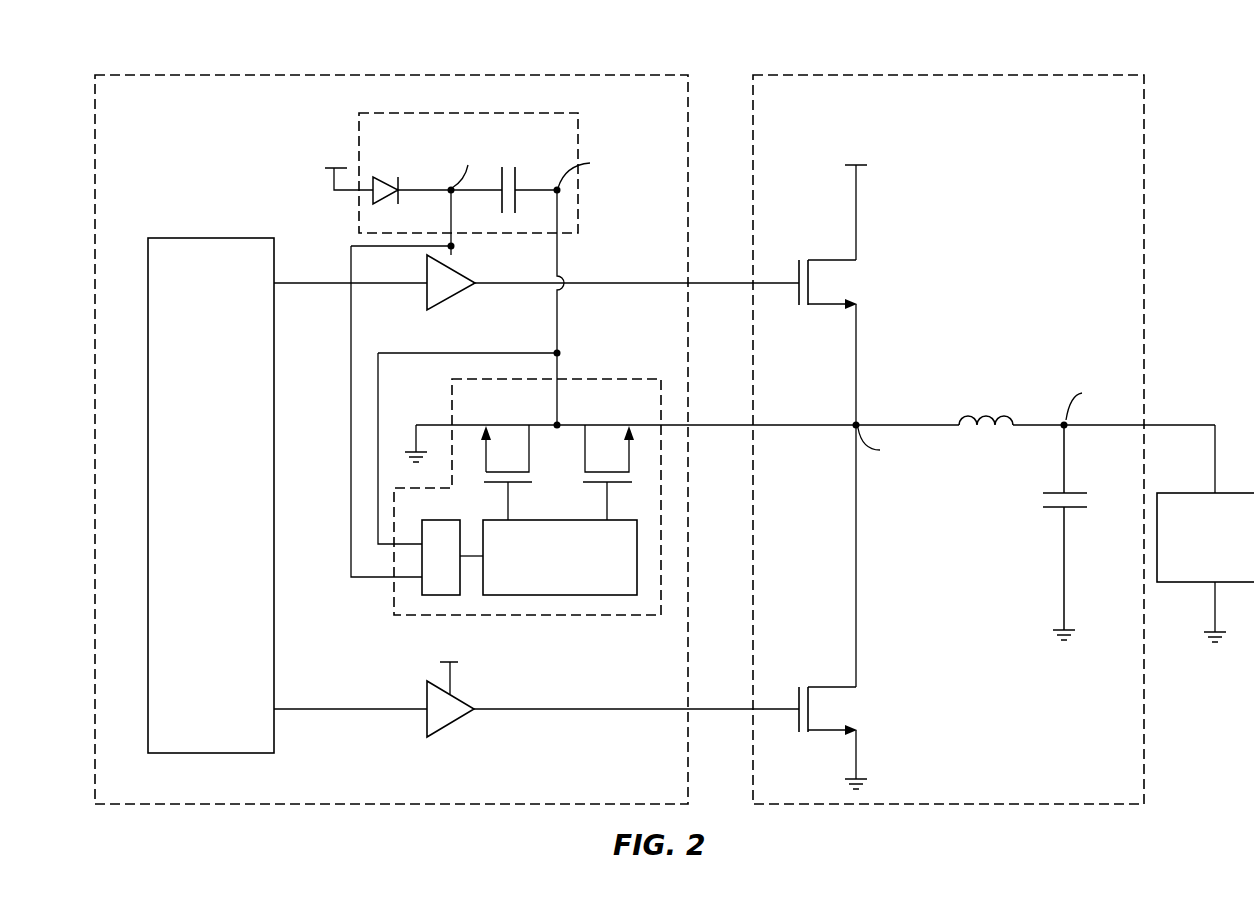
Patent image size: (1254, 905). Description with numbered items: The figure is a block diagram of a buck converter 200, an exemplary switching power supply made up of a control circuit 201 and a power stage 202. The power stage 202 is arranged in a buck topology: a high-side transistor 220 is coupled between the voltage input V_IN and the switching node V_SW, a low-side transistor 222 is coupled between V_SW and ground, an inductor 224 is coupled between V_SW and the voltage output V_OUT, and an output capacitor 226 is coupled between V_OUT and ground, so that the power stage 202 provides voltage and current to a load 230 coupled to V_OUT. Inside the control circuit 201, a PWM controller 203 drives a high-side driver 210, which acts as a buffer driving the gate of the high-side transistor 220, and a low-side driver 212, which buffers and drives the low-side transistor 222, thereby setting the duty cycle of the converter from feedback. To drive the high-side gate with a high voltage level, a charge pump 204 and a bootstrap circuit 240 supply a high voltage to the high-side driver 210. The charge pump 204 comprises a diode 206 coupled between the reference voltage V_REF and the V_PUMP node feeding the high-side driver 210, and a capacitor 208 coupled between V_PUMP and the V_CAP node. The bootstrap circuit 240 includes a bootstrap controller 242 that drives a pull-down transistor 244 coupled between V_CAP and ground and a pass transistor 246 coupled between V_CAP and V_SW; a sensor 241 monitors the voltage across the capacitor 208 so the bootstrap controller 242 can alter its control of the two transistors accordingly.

The buck converter 200 is at (146, 48).
The control circuit 201 is at (383, 75).
The power stage 202 is at (972, 75).
The PWM controller 203 is at (193, 536).
The charge pump 204 is at (580, 132).
The diode 206 is at (378, 177).
The capacitor 208 is at (515, 168).
The high-side driver 210 is at (452, 303).
The low-side driver 212 is at (452, 728).
The high-side transistor 220 is at (833, 260).
The low-side transistor 222 is at (833, 687).
The inductor 224 is at (1005, 405).
The output capacitor 226 is at (1077, 493).
The load 230 is at (1197, 565).
The bootstrap circuit 240 is at (595, 379).
The sensor 241 is at (440, 520).
The bootstrap controller 242 is at (637, 556).
The pull-down transistor 244 is at (533, 450).
The pass transistor 246 is at (632, 450).